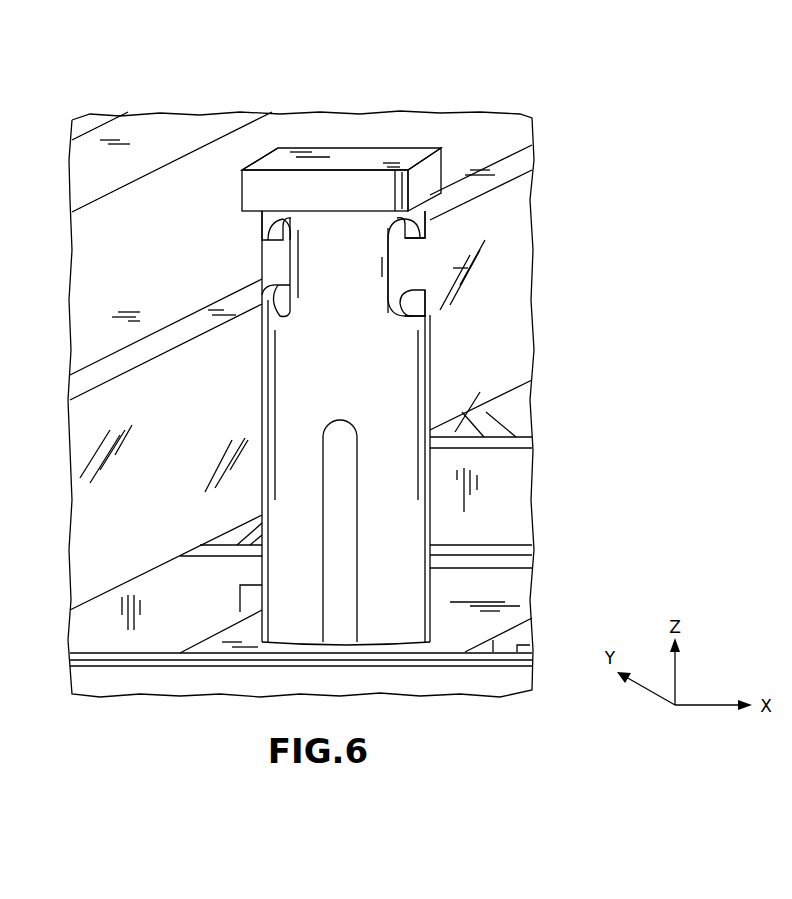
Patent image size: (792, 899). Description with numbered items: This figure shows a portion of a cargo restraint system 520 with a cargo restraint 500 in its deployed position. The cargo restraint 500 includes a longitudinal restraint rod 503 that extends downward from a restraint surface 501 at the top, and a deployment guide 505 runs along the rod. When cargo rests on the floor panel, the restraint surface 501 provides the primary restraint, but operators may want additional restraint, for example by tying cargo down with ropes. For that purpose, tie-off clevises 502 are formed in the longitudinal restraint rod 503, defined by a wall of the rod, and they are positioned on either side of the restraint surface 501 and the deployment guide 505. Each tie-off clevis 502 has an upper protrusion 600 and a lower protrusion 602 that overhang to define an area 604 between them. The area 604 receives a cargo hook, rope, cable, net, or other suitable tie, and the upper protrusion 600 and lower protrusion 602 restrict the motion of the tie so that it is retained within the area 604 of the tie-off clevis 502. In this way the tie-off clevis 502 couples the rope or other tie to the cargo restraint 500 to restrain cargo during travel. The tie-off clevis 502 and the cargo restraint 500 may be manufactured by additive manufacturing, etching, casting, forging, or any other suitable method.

The cargo restraint 500 is at (373, 178).
The restraint surface 501 is at (268, 155).
The tie-off clevis 502 is at (398, 272).
The longitudinal restraint rod 503 is at (395, 393).
The deployment guide 505 is at (345, 577).
The cargo restraint system 520 is at (170, 113).
The upper protrusion 600 is at (425, 223).
The lower protrusion 602 is at (425, 301).
The area 604 is at (410, 264).